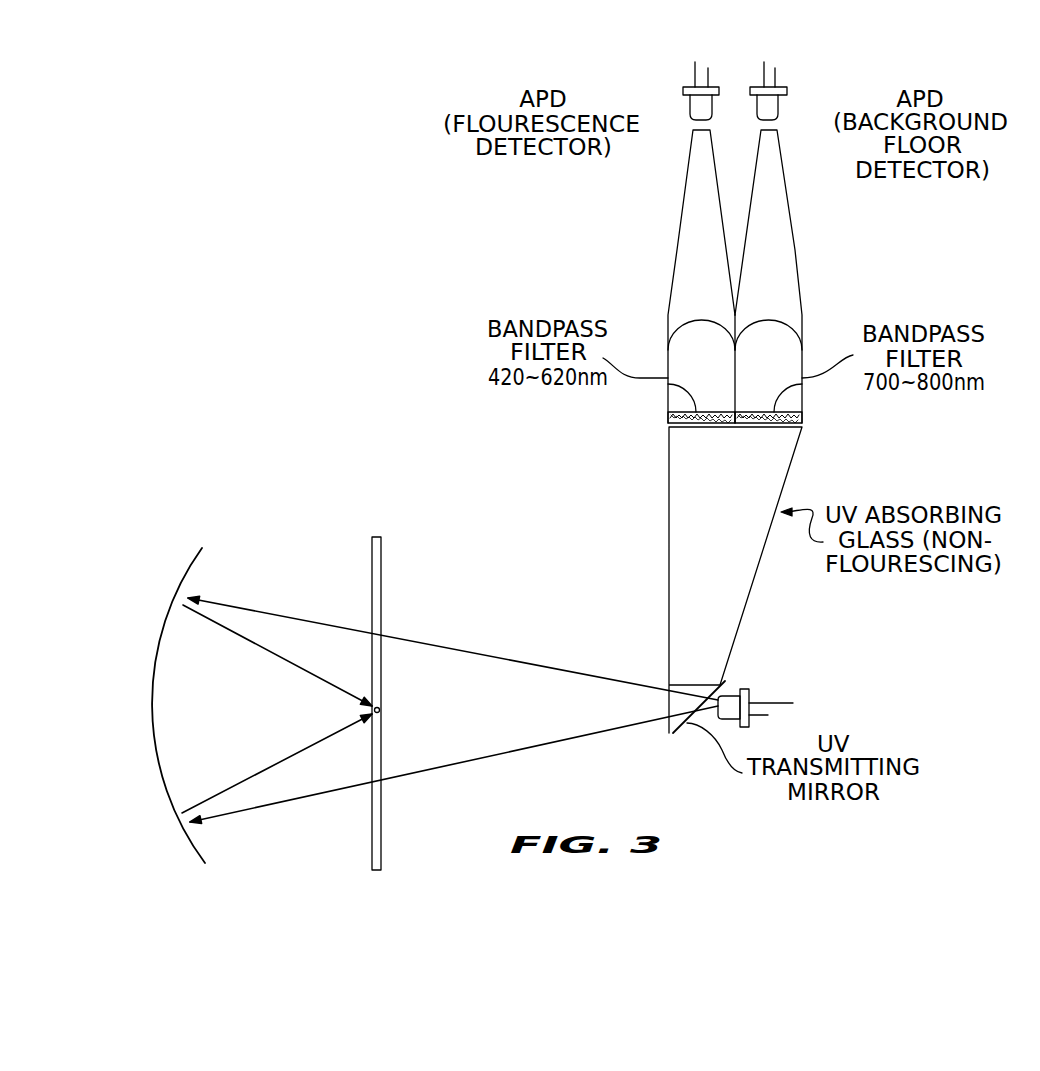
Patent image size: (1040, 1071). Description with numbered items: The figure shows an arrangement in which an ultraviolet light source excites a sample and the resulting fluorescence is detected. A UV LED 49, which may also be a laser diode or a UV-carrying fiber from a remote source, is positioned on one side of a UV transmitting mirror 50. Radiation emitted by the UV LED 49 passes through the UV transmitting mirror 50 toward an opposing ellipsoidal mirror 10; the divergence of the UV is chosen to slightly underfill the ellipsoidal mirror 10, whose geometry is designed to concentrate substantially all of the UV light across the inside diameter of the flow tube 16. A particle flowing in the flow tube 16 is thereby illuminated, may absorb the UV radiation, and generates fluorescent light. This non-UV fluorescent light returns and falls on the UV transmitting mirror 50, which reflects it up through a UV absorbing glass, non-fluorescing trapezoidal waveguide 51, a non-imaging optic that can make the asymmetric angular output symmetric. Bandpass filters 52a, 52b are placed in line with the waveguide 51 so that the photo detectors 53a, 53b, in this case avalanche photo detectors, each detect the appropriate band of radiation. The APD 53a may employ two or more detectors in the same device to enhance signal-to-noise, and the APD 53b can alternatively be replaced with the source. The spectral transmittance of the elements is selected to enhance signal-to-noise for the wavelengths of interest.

The ellipsoidal mirror 10 is at (190, 562).
The flow tube 16 is at (381, 546).
The UV LED 49 is at (735, 692).
The UV transmitting mirror 50 is at (673, 728).
The UV absorbing glass trapezoidal waveguide 51 is at (737, 617).
The bandpass filter 52a is at (668, 415).
The bandpass filter 52b is at (802, 413).
The avalanche photo detector 53a is at (690, 118).
The avalanche photo detector 53b is at (780, 118).